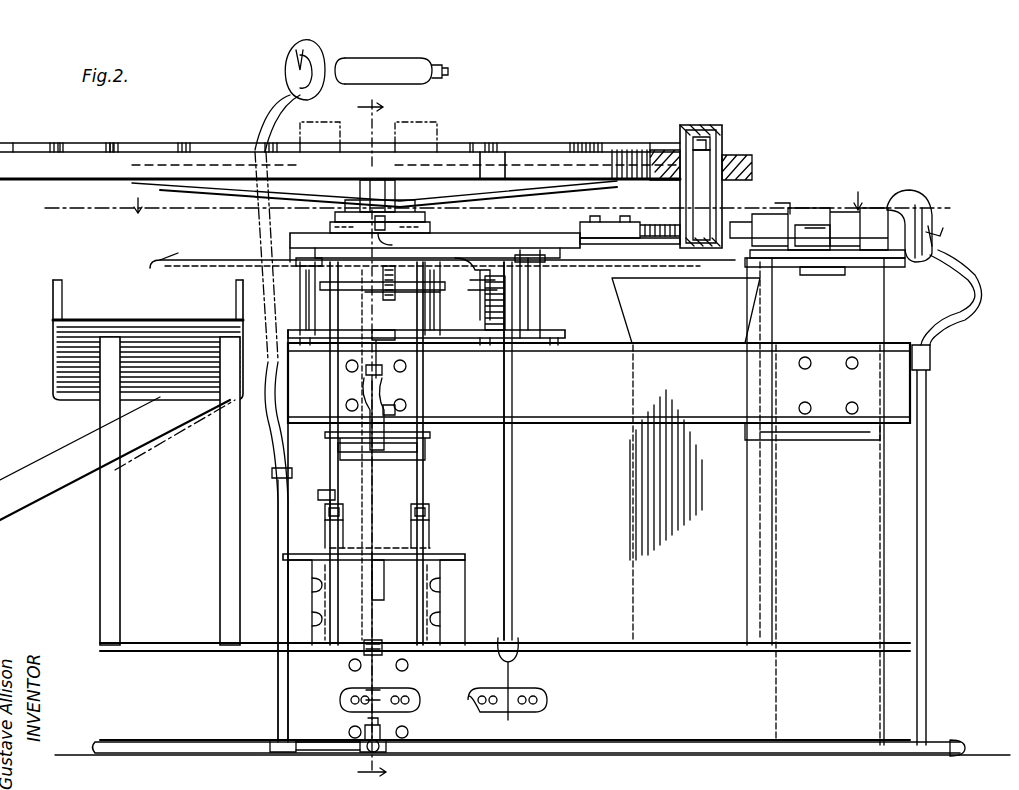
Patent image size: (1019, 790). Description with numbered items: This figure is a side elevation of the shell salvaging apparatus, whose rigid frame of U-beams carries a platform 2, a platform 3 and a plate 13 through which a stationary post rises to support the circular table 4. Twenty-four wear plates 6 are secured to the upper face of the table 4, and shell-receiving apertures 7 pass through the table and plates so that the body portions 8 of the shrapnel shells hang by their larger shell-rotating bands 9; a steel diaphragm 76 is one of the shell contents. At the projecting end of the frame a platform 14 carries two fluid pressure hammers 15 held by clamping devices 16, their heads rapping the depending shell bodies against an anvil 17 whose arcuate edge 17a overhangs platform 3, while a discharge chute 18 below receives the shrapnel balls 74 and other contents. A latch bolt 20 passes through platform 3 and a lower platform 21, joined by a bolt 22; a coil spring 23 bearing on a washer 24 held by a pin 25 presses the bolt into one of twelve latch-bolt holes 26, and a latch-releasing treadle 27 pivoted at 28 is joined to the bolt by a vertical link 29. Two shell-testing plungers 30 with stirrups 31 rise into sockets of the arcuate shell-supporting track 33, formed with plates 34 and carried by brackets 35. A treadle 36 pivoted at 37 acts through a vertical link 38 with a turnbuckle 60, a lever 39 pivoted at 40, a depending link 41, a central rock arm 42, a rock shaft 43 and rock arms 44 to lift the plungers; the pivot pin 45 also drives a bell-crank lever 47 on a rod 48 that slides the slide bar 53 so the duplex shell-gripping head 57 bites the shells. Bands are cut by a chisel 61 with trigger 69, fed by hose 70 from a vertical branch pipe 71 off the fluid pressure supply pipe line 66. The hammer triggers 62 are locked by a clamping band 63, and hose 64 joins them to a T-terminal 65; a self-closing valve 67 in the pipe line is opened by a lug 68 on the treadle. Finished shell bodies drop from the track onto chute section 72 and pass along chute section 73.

The platform 2 is at (312, 553).
The platform 3 is at (477, 437).
The table 4 is at (752, 162).
The wear plates 6 is at (40, 143).
The shell-receiving apertures 7 is at (752, 178).
The body portions 8 is at (695, 106).
The shell-rotating bands 9 is at (722, 135).
The plate 13 is at (300, 240).
The platform 14 is at (805, 268).
The fluid pressure hammers 15 is at (790, 215).
The clamping devices 16 is at (840, 265).
The anvil 17 is at (612, 222).
The arcuate edge 17a is at (675, 244).
The discharge chute 18 is at (686, 310).
The latch bolt 20 is at (510, 205).
The lower platform 21 is at (545, 332).
The bolt 22 is at (540, 300).
The coil spring 23 is at (484, 306).
The washer 24 is at (476, 284).
The pin 25 is at (542, 264).
The latch-bolt holes 26 is at (490, 150).
The latch-releasing treadle 27 is at (520, 668).
The pivot 28 is at (540, 695).
The vertical link 29 is at (515, 551).
The shell-testing plungers 30 is at (330, 402).
The stirrups 31 is at (325, 512).
The shell-supporting track 33 is at (247, 256).
The plates 34 is at (300, 285).
The brackets 35 is at (300, 270).
The treadle 36 is at (382, 640).
The pivot 37 is at (380, 685).
The vertical link 38 is at (366, 368).
The lever 39 is at (364, 385).
The pivot 40 is at (396, 378).
The depending link 41 is at (338, 440).
The central rock arm 42 is at (425, 460).
The rock shaft 43 is at (320, 480).
The rock arms 44 is at (360, 548).
The pivot pin 45 is at (370, 346).
The bell-crank lever 47 is at (330, 290).
The rod 48 is at (396, 295).
The slide bar 53 is at (395, 245).
The duplex shell-gripping head 57 is at (392, 208).
The turnbuckle 60 is at (384, 585).
The fluid-pressure-operated chisel 61 is at (385, 60).
The pressure supply triggers 62 is at (925, 205).
The clamping band 63 is at (940, 222).
The hose 64 is at (965, 290).
The T-terminal 65 is at (926, 395).
The fluid pressure supply pipe line 66 is at (190, 740).
The self-closing valve 67 is at (380, 720).
The lug 68 is at (340, 718).
The trigger 69 is at (292, 50).
The hose 70 is at (268, 108).
The vertical branch pipe 71 is at (278, 500).
The chute section 72 is at (88, 316).
The chute section 73 is at (145, 448).
The shrapnel balls 74 is at (670, 226).
The steel diaphragm 76 is at (715, 130).